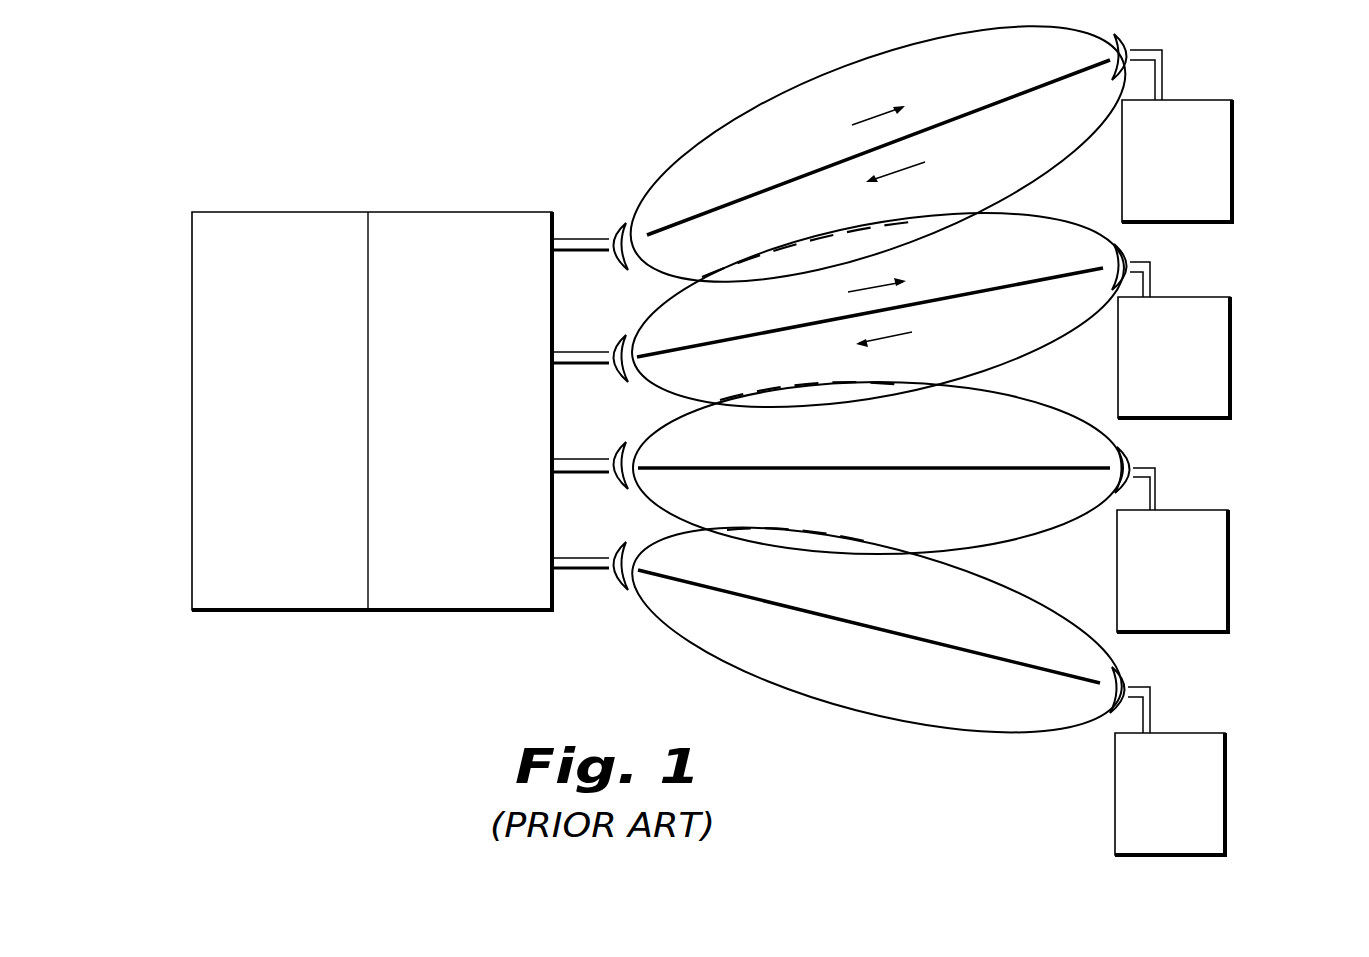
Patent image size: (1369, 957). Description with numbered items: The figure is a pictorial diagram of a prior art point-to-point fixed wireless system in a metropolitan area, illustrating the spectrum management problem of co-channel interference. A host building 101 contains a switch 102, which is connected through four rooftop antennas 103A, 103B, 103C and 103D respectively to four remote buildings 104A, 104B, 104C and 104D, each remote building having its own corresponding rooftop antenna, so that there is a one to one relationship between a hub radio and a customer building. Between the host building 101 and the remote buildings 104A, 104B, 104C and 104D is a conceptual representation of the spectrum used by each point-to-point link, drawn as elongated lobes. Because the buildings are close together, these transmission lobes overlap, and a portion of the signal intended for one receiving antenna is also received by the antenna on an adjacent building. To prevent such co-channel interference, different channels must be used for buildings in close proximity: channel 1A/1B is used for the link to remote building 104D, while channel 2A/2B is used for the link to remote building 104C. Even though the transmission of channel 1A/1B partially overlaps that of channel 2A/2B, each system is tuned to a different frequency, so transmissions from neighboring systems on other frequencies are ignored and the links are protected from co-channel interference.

The host building 101 is at (262, 213).
The switch 102 is at (403, 590).
The rooftop antenna 103A is at (585, 567).
The rooftop antenna 103B is at (587, 463).
The rooftop antenna 103C is at (583, 357).
The rooftop antenna 103D is at (590, 243).
The remote building 104A is at (1225, 800).
The remote building 104B is at (1228, 578).
The remote building 104C is at (1230, 365).
The remote building 104D is at (1233, 170).
The channel 1A is at (849, 122).
The channel 1B is at (863, 190).
The channel 2A is at (847, 296).
The channel 2B is at (857, 350).